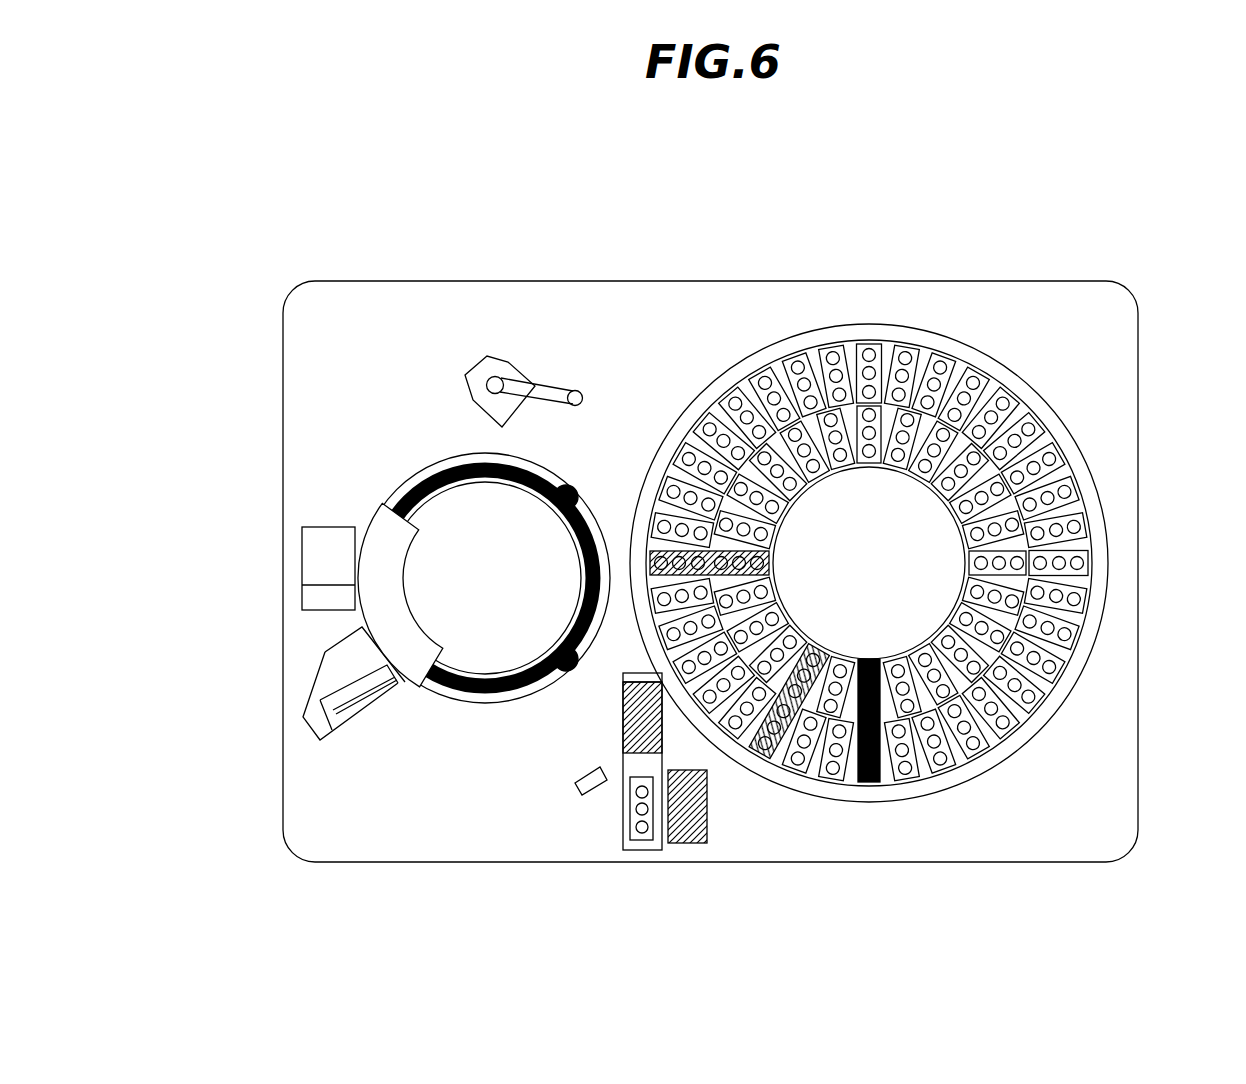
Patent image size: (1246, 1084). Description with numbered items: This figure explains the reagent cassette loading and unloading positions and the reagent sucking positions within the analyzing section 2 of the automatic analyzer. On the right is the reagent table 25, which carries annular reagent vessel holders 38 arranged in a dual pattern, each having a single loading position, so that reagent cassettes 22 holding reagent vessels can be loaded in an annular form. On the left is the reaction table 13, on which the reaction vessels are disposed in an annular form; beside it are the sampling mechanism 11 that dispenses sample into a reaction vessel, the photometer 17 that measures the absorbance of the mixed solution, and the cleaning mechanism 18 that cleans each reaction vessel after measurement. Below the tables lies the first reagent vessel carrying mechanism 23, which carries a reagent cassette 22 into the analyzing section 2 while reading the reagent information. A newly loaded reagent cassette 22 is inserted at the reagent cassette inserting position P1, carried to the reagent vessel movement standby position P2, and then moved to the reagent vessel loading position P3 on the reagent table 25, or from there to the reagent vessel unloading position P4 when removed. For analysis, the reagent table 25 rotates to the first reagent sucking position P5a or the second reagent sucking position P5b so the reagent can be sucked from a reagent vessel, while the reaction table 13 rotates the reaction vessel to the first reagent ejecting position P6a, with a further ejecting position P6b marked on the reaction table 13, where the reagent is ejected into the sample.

The analyzing section 2 is at (1008, 282).
The reagent table 25 is at (1030, 410).
The annular reagent vessel holders 38 is at (810, 420).
The reaction table 13 is at (410, 477).
The sampling mechanism 11 is at (480, 366).
The cleaning mechanism 18 is at (302, 545).
The photometer 17 is at (311, 728).
The reagent cassette 22 is at (644, 855).
The first reagent vessel carrying mechanism 23 is at (623, 845).
The reagent cassette inserting position P1 is at (632, 843).
The reagent vessel movement standby position P2 is at (622, 721).
The reagent vessel loading position P3 is at (873, 786).
The reagent vessel unloading position P4 is at (693, 845).
The first reagent sucking position P5a is at (758, 758).
The second reagent sucking position P5b is at (672, 550).
The first reagent ejecting position P6a is at (555, 656).
The position P6b is at (566, 488).